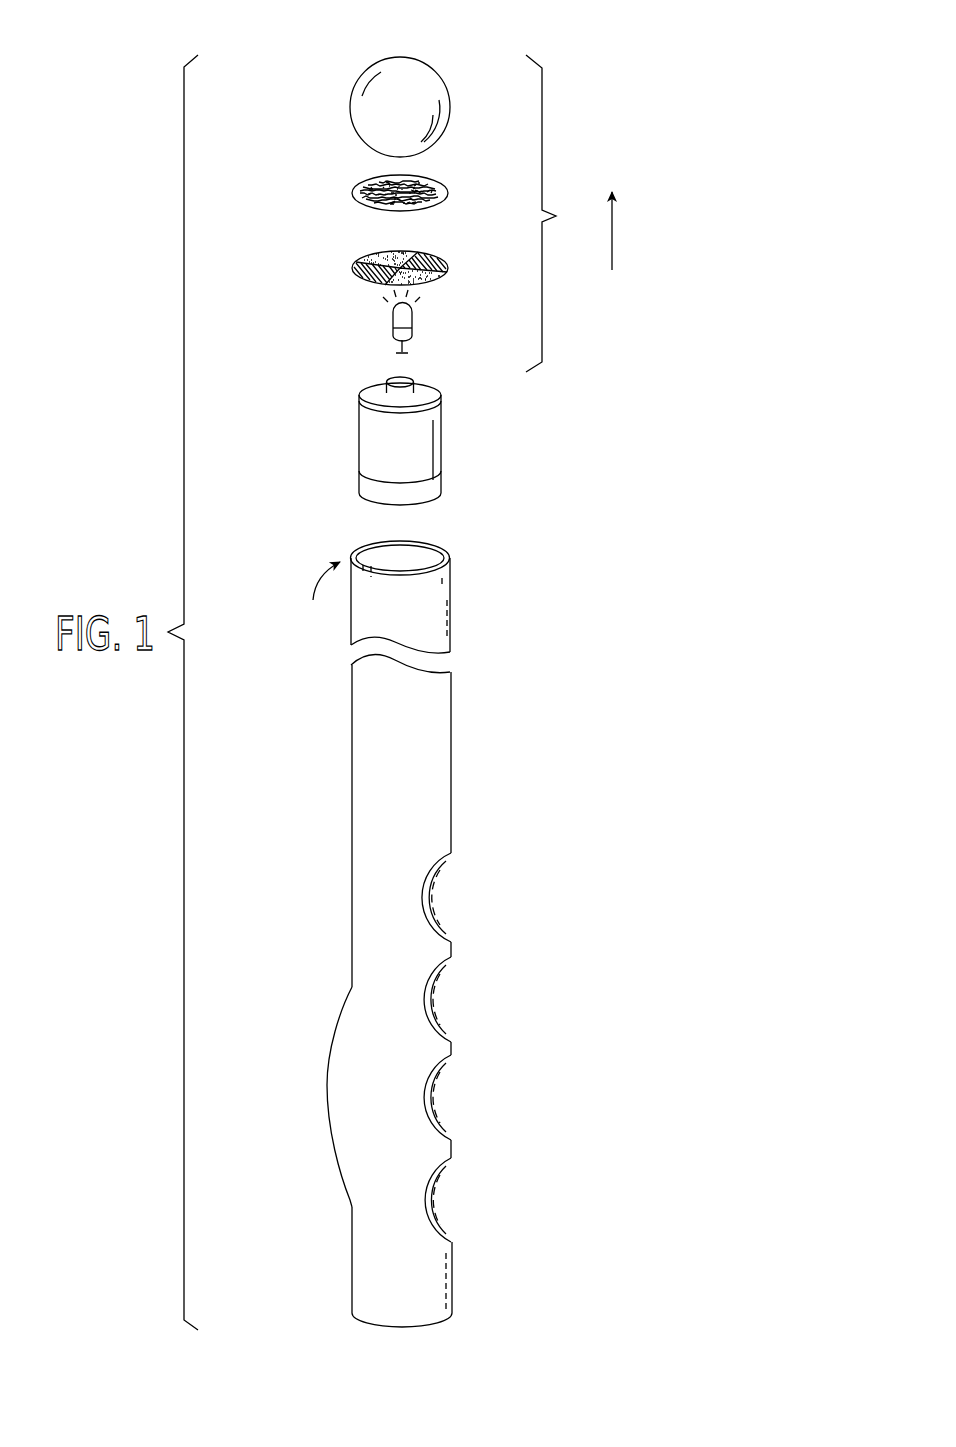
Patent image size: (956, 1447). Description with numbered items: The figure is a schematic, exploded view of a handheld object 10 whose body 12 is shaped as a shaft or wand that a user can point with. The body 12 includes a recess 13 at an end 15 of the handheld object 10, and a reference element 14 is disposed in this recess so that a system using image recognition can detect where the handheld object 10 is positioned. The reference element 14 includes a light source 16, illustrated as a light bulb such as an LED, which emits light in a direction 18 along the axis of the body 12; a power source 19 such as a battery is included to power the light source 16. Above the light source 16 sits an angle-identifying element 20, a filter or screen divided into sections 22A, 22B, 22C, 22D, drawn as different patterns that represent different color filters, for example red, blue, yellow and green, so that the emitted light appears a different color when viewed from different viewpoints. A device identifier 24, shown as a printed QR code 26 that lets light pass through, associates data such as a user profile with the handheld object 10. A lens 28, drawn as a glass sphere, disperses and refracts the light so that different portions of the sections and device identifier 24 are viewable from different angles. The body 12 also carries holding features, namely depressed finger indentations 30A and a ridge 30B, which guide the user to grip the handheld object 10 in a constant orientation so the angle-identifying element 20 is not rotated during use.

The handheld object 10 is at (318, 36).
The body 12 is at (391, 918).
The recess 13 is at (450, 545).
The reference element 14 is at (557, 213).
The end 15 is at (322, 597).
The light source 16 is at (392, 330).
The direction 18 is at (614, 233).
The power source 19 is at (441, 440).
The angle-identifying element 20 is at (413, 266).
The section 22A is at (372, 255).
The section 22B is at (428, 254).
The section 22C is at (360, 282).
The section 22D is at (428, 285).
The device identifier 24 is at (401, 178).
The printed QR code 26 is at (378, 176).
The lens 28 is at (398, 57).
The depressed finger indentations 30A is at (440, 1000).
The ridge 30B is at (330, 1105).